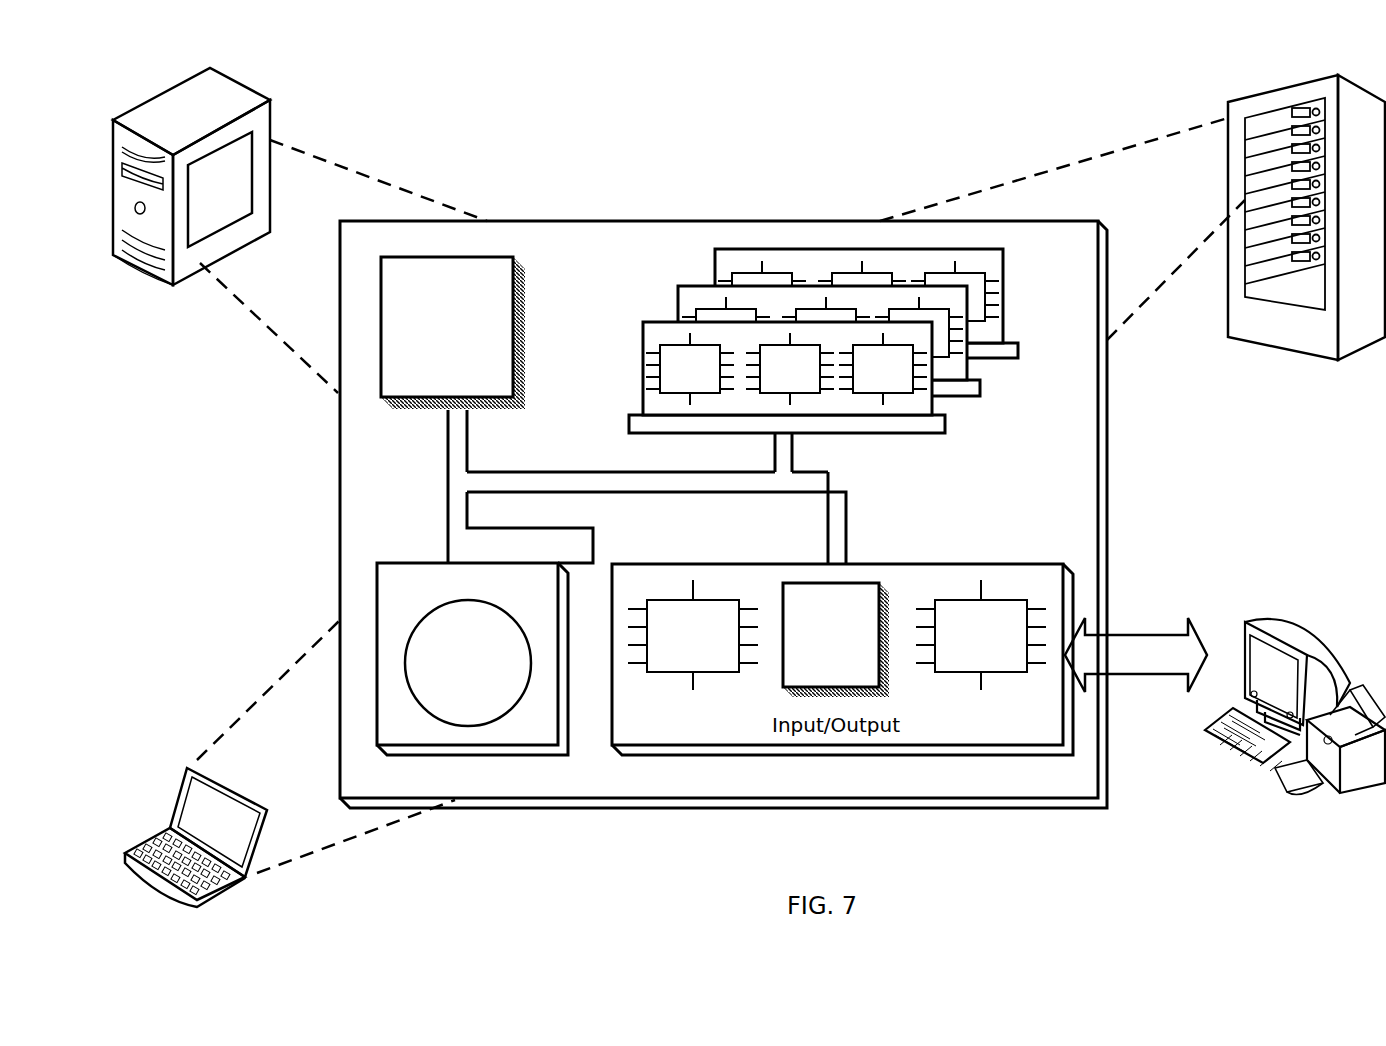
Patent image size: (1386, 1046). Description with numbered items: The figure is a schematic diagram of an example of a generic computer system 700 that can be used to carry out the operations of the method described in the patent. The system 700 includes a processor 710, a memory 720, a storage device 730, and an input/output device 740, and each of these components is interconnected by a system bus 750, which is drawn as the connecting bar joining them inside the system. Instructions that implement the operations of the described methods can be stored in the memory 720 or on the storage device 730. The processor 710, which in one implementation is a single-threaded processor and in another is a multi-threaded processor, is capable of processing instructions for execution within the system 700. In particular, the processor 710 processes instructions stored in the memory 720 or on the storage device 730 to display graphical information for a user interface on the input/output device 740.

The generic computer system 700 is at (540, 90).
The processor 710 is at (453, 333).
The memory 720 is at (1012, 396).
The storage device 730 is at (472, 659).
The input/output device 740 is at (1243, 620).
The system bus 750 is at (642, 492).